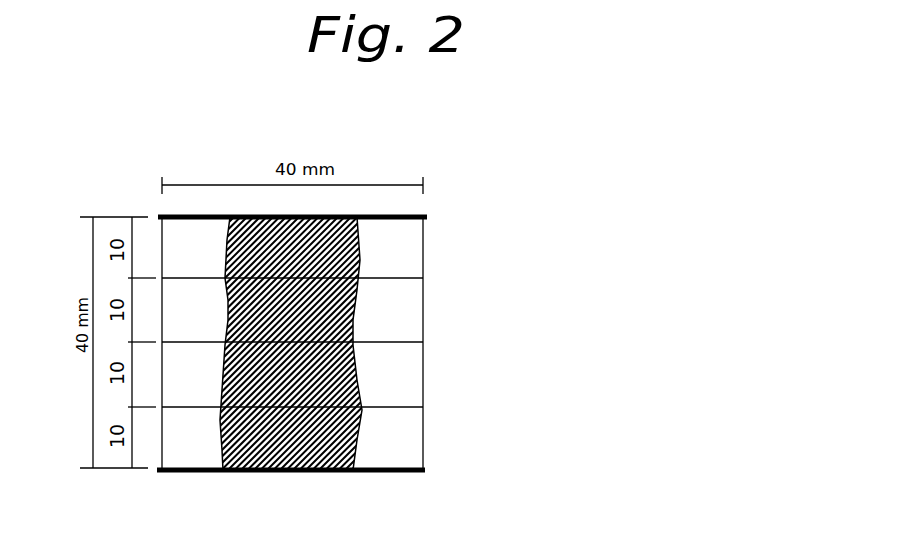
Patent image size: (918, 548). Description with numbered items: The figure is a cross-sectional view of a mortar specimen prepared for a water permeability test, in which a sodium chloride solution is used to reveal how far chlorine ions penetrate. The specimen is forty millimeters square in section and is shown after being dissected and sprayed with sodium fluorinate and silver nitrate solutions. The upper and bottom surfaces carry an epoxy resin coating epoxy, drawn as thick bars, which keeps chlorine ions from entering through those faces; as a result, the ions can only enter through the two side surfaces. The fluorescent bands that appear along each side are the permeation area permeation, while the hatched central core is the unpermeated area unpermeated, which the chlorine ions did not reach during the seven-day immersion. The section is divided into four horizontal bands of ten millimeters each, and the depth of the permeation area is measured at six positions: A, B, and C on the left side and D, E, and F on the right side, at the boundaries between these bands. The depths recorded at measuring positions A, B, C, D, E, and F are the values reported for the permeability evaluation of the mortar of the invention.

The measuring position A is at (195, 247).
The measuring position B is at (195, 310).
The measuring position C is at (195, 374).
The measuring position D is at (390, 247).
The measuring position E is at (390, 310).
The measuring position F is at (390, 374).
The epoxy resin coating epoxy is at (423, 321).
The permeation area permeation is at (342, 343).
The unpermeated area unpermeated is at (438, 348).